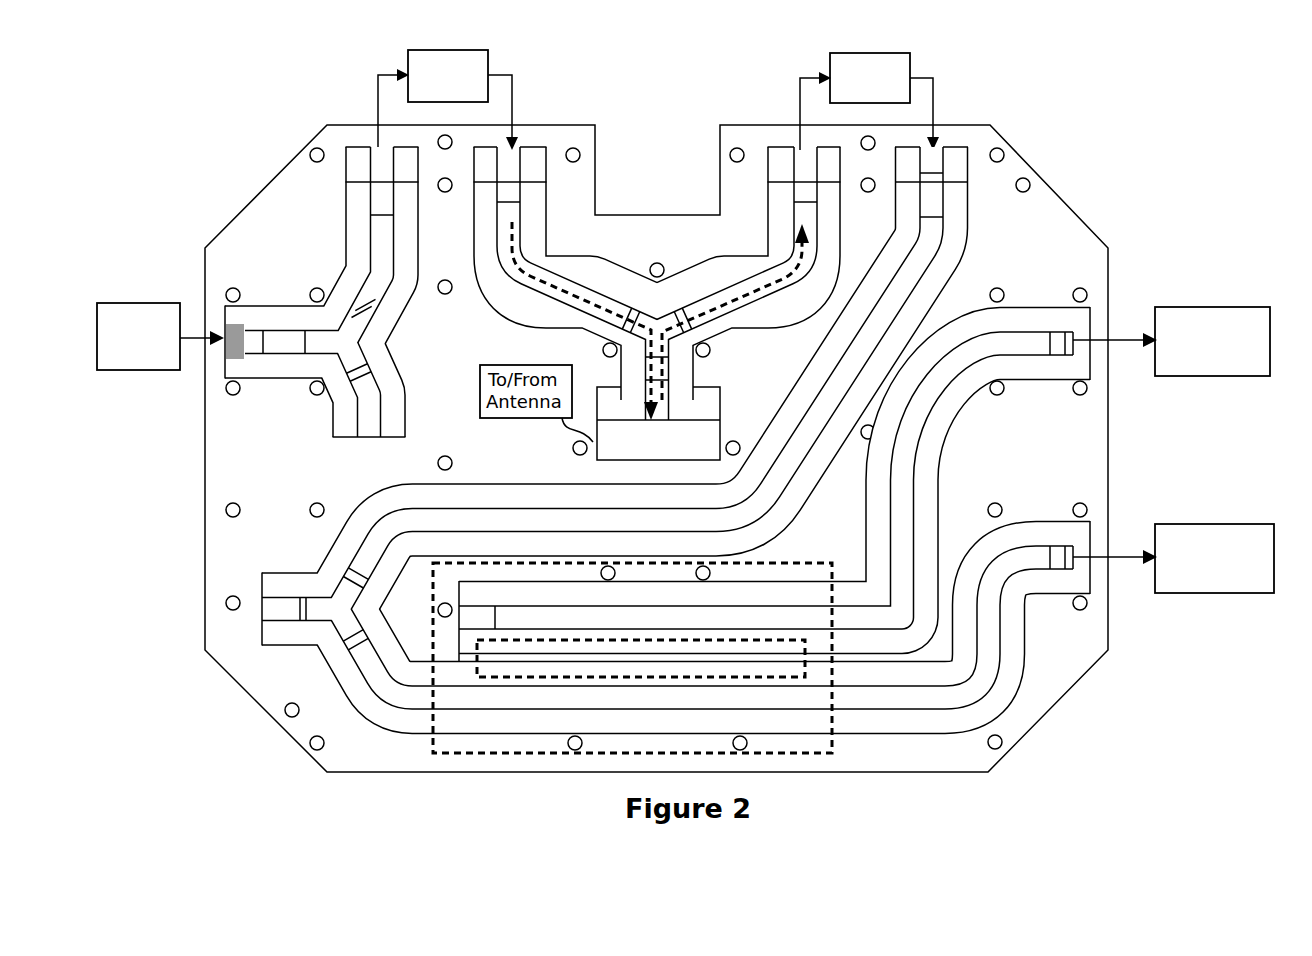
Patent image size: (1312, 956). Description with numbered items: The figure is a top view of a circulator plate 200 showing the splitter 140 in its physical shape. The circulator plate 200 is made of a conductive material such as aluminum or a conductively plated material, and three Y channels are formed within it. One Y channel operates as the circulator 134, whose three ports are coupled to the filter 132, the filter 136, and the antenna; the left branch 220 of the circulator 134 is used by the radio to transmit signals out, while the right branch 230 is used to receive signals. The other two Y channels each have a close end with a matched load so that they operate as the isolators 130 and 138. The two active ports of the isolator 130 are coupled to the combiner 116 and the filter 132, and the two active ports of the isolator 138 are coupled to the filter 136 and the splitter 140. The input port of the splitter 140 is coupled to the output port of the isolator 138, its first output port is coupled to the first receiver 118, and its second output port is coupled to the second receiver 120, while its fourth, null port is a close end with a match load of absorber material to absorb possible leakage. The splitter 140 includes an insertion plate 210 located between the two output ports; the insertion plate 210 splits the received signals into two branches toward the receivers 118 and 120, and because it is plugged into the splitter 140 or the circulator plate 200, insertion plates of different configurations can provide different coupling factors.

The circulator plate 200 is at (174, 100).
The combiner 116 is at (166, 303).
The first receiver 118 is at (1240, 524).
The second receiver 120 is at (1240, 307).
The isolator 130 is at (325, 280).
The filter 132 is at (490, 62).
The circulator 134 is at (650, 262).
The filter 136 is at (912, 68).
The isolator 138 is at (300, 648).
The splitter 140 is at (800, 755).
The insertion plate 210 is at (630, 677).
The left branch 220 is at (552, 288).
The right branch 230 is at (763, 285).